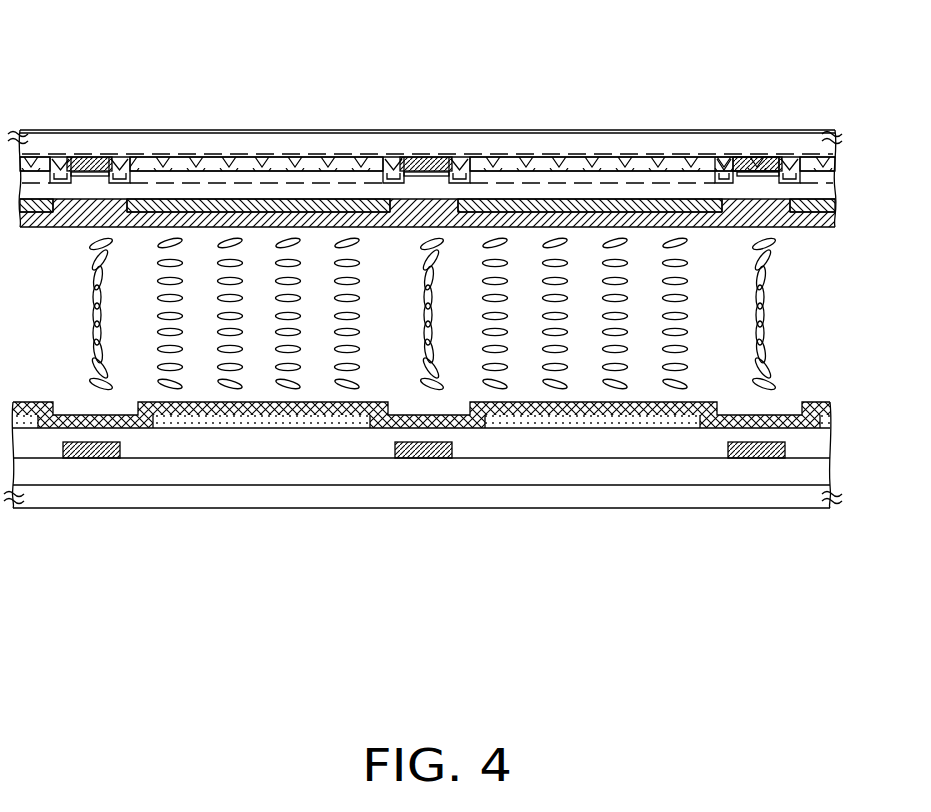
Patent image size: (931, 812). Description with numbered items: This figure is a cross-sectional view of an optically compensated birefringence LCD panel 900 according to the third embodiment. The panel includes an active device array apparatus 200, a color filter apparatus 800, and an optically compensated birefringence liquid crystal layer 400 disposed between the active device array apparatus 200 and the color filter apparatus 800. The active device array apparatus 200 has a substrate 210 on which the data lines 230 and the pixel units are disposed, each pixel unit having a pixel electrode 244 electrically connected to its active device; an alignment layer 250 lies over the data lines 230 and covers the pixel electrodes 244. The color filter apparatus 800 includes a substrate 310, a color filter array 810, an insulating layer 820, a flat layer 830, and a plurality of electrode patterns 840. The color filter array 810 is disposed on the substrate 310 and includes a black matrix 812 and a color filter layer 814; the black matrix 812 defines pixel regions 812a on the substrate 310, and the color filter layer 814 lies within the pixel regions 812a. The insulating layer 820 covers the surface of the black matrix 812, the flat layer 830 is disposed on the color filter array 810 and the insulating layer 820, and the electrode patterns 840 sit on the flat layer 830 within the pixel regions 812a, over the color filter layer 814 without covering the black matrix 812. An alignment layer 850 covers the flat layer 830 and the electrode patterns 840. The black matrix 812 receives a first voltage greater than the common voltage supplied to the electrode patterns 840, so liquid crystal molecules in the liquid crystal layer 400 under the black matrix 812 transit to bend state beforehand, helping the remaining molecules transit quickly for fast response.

The optically compensated birefringence LCD panel 900 is at (839, 590).
The color filter apparatus 800 is at (853, 127).
The substrate 310 is at (87, 142).
The pixel regions 812a is at (685, 152).
The color filter array 810 is at (510, 53).
The black matrix 812 is at (425, 162).
The color filter layer 814 is at (495, 163).
The insulating layer 820 is at (411, 158).
The flat layer 830 is at (598, 188).
The electrode patterns 840 is at (182, 203).
The alignment layer 850 is at (250, 218).
The optically compensated birefringence liquid crystal layer 400 is at (763, 288).
The active device array apparatus 200 is at (853, 402).
The alignment layer 250 is at (333, 408).
The pixel electrode 244 is at (270, 422).
The data lines 230 is at (137, 445).
The substrate 210 is at (102, 498).